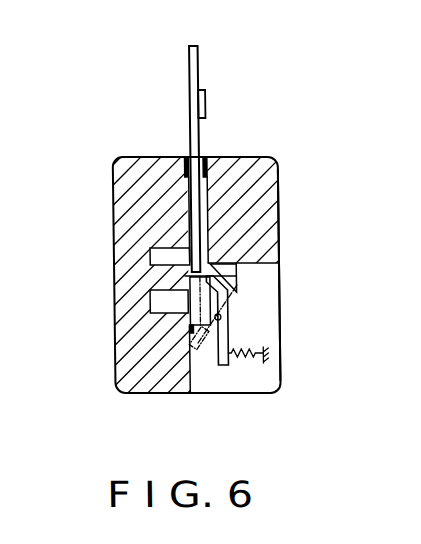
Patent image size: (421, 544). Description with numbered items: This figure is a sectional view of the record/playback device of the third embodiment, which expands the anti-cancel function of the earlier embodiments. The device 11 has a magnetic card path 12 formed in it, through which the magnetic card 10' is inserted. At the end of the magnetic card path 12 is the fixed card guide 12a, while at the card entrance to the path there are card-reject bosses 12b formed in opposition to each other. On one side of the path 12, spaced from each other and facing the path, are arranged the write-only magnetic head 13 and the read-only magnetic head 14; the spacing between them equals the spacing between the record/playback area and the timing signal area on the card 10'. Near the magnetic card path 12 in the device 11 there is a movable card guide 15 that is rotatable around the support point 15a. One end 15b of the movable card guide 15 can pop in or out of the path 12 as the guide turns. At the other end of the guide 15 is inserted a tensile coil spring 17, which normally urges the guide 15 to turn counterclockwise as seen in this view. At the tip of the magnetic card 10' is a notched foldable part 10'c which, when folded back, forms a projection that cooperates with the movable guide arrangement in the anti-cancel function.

The magnetic card 10' is at (153, 159).
The notched foldable part 10'c is at (240, 72).
The device 11 is at (278, 197).
The magnetic card path 12 is at (270, 160).
The fixed card guide 12a is at (184, 340).
The card-reject bosses 12b is at (181, 163).
The write-only magnetic head 13 is at (151, 300).
The read-only magnetic head 14 is at (150, 258).
The movable card guide 15 is at (232, 291).
The support point 15a is at (233, 308).
The end of movable card guide 15b is at (225, 266).
The tensile coil spring 17 is at (243, 363).